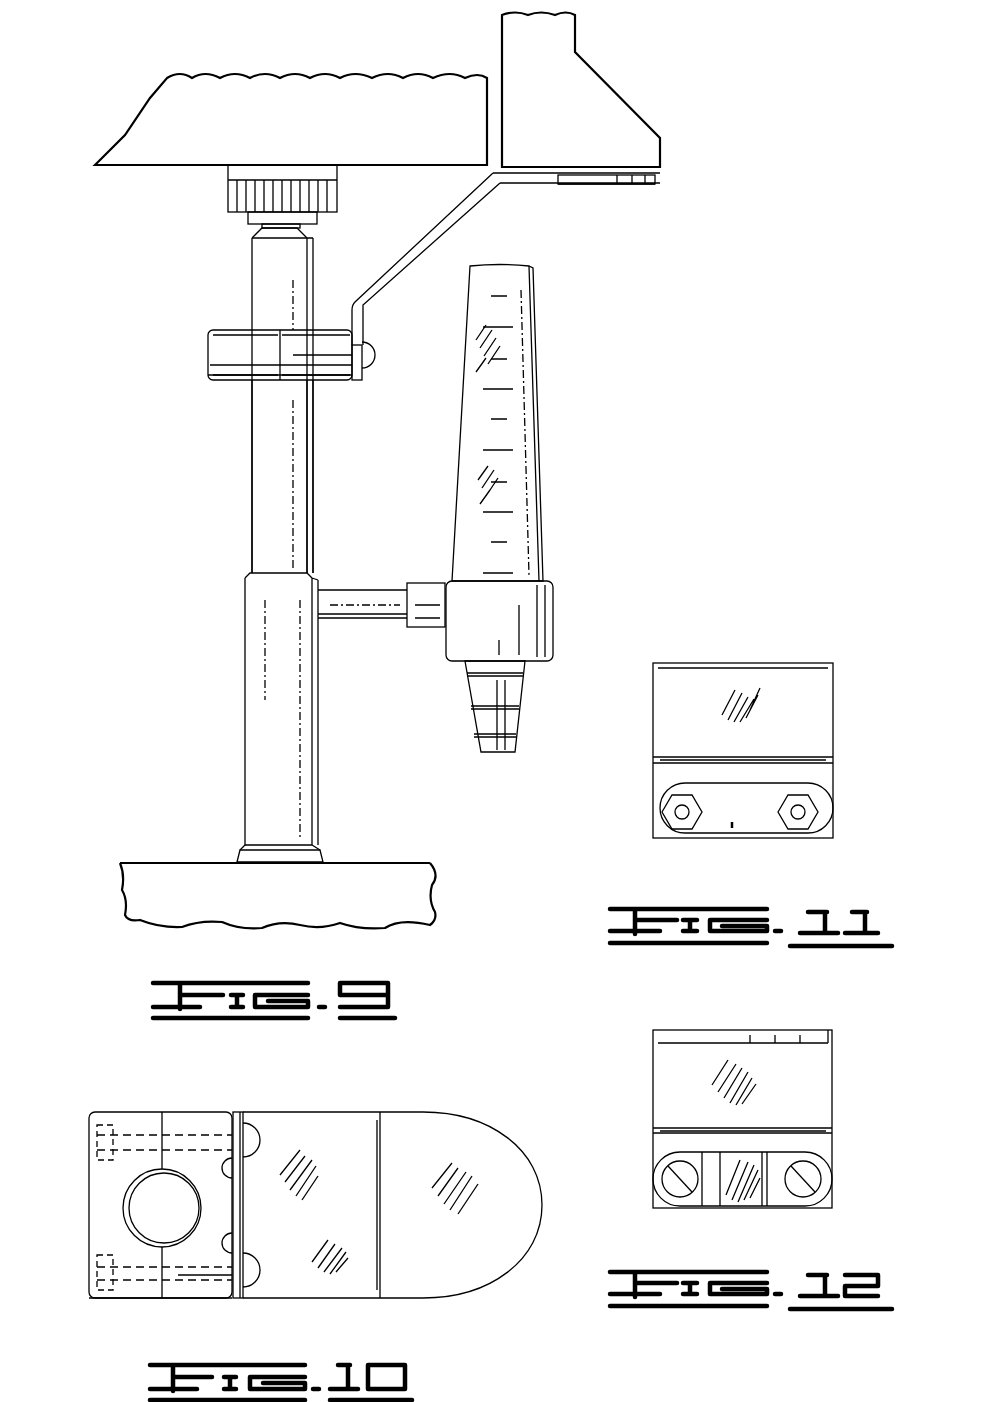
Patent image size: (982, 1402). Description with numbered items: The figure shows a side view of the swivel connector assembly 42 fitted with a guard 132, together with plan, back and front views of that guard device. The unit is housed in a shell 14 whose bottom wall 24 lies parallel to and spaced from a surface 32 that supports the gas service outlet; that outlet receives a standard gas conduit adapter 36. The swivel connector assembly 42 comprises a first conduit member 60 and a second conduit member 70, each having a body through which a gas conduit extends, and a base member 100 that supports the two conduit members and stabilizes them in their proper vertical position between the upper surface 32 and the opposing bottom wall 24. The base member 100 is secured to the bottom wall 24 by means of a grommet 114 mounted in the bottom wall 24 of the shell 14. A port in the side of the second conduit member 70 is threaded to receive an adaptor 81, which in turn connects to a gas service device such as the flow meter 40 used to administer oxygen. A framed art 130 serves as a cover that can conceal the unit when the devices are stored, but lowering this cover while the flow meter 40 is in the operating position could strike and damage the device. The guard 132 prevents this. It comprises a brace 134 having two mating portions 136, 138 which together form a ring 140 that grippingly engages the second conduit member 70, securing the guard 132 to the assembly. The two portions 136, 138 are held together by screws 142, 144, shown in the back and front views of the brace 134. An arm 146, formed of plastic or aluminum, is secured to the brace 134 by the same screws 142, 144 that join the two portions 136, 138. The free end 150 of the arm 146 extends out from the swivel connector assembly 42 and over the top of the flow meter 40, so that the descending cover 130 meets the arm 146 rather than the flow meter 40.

In FIG. 9, the shell 14 is at (438, 890).
In FIG. 9, the bottom wall 24 is at (390, 862).
In FIG. 9, the surface 32 is at (170, 168).
In FIG. 9, the gas conduit adapter 36 is at (340, 190).
In FIG. 9, the flow meter 40 is at (537, 450).
In FIG. 9, the swivel connector assembly 42 is at (318, 482).
In FIG. 9, the first conduit member 60 is at (250, 265).
In FIG. 9, the second conduit member 70 is at (248, 486).
In FIG. 9, the adaptor 81 is at (338, 590).
In FIG. 9, the base member 100 is at (318, 765).
In FIG. 9, the grommet 114 is at (330, 848).
In FIG. 9, the framed art 130 is at (592, 105).
In FIG. 9, the guard 132 is at (395, 268).
In FIG. 11, the guard 132 is at (648, 773).
In FIG. 12, the guard 132 is at (648, 1095).
In FIG. 10, the guard 132 is at (332, 1108).
In FIG. 9, the brace 134 is at (226, 330).
In FIG. 11, the brace 134 is at (732, 832).
In FIG. 12, the brace 134 is at (658, 1174).
In FIG. 10, the brace 134 is at (213, 1300).
In FIG. 9, the mating portion 136 is at (235, 380).
In FIG. 10, the mating portion 136 is at (110, 1195).
In FIG. 9, the mating portion 138 is at (325, 380).
In FIG. 10, the mating portion 138 is at (205, 1122).
In FIG. 10, the ring 140 is at (147, 1183).
In FIG. 11, the screw 142 is at (800, 832).
In FIG. 12, the screw 142 is at (680, 1197).
In FIG. 10, the screw 142 is at (260, 1290).
In FIG. 11, the screw 144 is at (675, 812).
In FIG. 12, the screw 144 is at (803, 1197).
In FIG. 10, the screw 144 is at (255, 1133).
In FIG. 9, the arm 146 is at (578, 186).
In FIG. 11, the arm 146 is at (732, 662).
In FIG. 12, the arm 146 is at (698, 1030).
In FIG. 10, the arm 146 is at (343, 1112).
In FIG. 9, the free end 150 is at (662, 180).
In FIG. 10, the free end 150 is at (487, 1300).